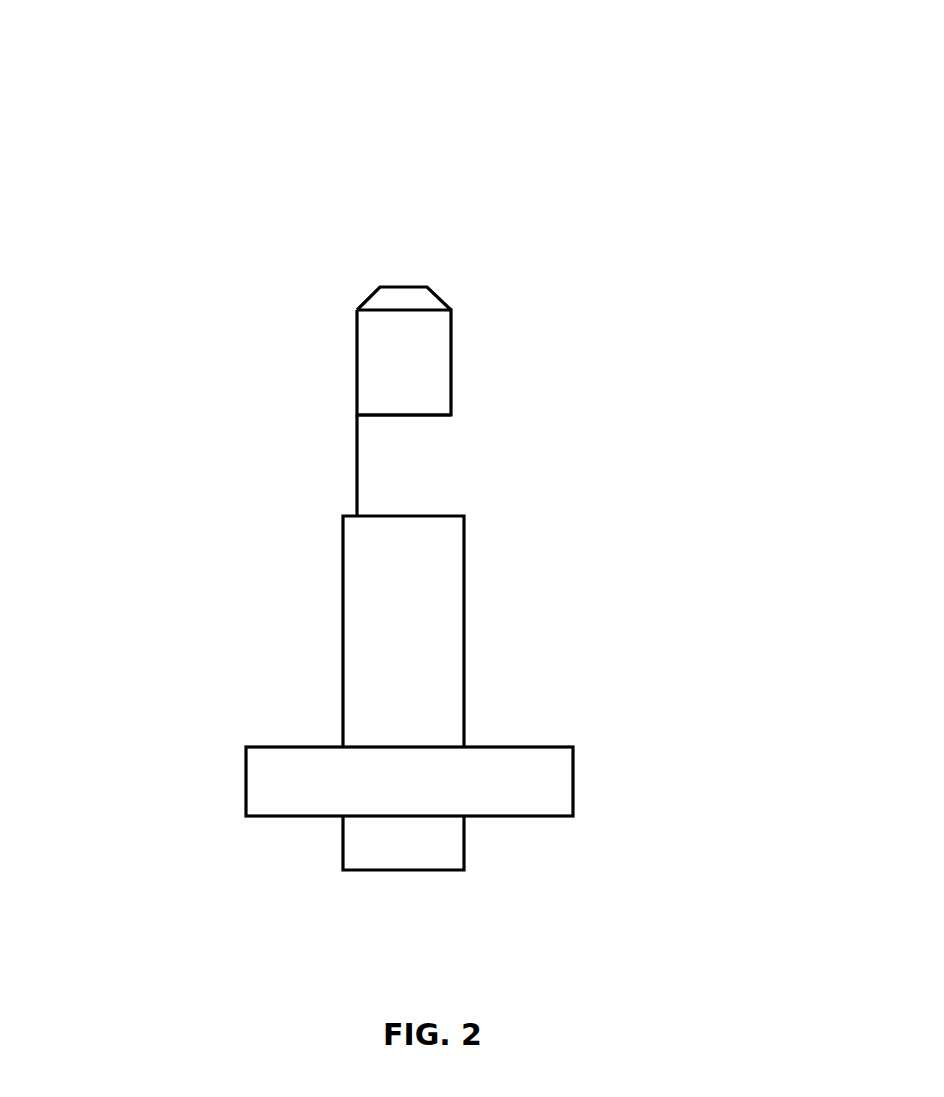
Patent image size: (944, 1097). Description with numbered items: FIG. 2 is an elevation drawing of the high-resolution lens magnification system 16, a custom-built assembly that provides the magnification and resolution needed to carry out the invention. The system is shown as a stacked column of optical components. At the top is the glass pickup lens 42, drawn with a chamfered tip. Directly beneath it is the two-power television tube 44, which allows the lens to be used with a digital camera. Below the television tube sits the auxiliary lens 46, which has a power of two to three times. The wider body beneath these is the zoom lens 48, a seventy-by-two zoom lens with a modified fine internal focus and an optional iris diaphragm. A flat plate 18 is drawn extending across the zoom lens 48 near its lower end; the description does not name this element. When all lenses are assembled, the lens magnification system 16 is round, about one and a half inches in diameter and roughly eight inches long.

The high-resolution lens magnification system 16 is at (245, 286).
The mounting plate 18 is at (265, 787).
The glass pickup lens 42 is at (430, 293).
The 2× power television tube 44 is at (443, 334).
The auxiliary lens 46 is at (382, 462).
The zoom lens 48 is at (463, 669).